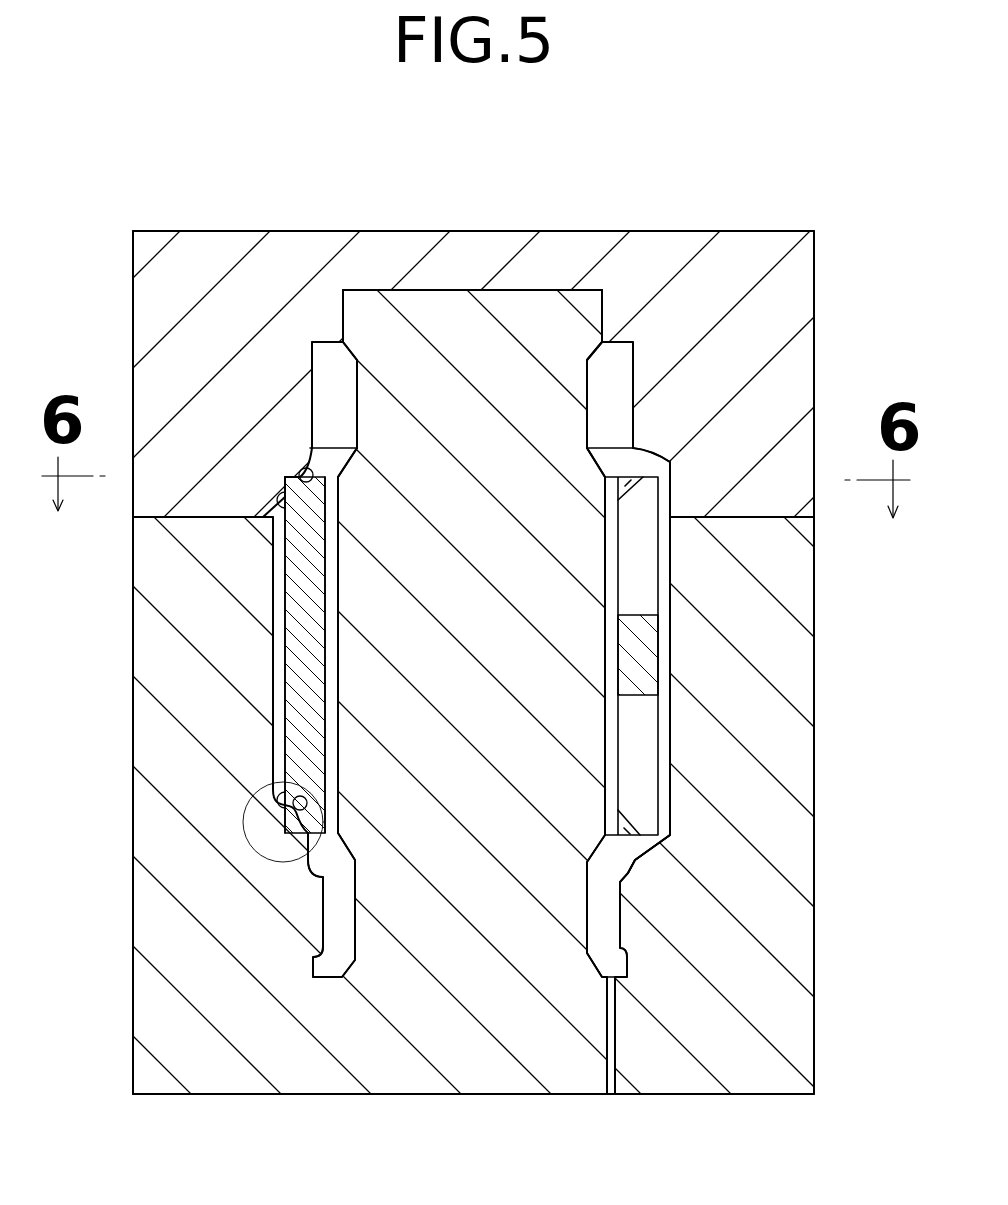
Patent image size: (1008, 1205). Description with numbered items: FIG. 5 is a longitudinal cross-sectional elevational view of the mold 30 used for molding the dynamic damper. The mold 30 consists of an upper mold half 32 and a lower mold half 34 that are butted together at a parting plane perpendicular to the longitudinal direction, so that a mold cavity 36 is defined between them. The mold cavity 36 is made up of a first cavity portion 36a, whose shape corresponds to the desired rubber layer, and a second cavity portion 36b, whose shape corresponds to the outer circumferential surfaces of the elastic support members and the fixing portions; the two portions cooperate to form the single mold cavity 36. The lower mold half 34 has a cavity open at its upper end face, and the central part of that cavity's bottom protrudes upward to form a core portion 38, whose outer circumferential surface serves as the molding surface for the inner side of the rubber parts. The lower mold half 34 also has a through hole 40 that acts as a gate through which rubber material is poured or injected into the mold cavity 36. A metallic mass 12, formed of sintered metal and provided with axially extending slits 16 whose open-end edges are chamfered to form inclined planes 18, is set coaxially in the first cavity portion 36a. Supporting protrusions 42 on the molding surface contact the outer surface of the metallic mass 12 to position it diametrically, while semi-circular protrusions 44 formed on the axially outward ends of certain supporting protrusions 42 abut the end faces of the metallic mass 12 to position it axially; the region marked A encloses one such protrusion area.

The mold 30 is at (784, 174).
The upper mold half 32 is at (802, 280).
The lower mold half 34 is at (790, 957).
The core portion 38 is at (468, 315).
The mold cavity 36 is at (327, 921).
The first cavity portion 36a is at (278, 700).
The second cavity portion 36b is at (330, 378).
The metallic mass 12 is at (300, 618).
The slits 16 is at (640, 554).
The inclined planes 18 is at (623, 487).
The through hole 40 is at (612, 1077).
The supporting protrusions 42 is at (284, 505).
The semi-circular protrusions 44 is at (304, 466).
The detail region A is at (268, 857).